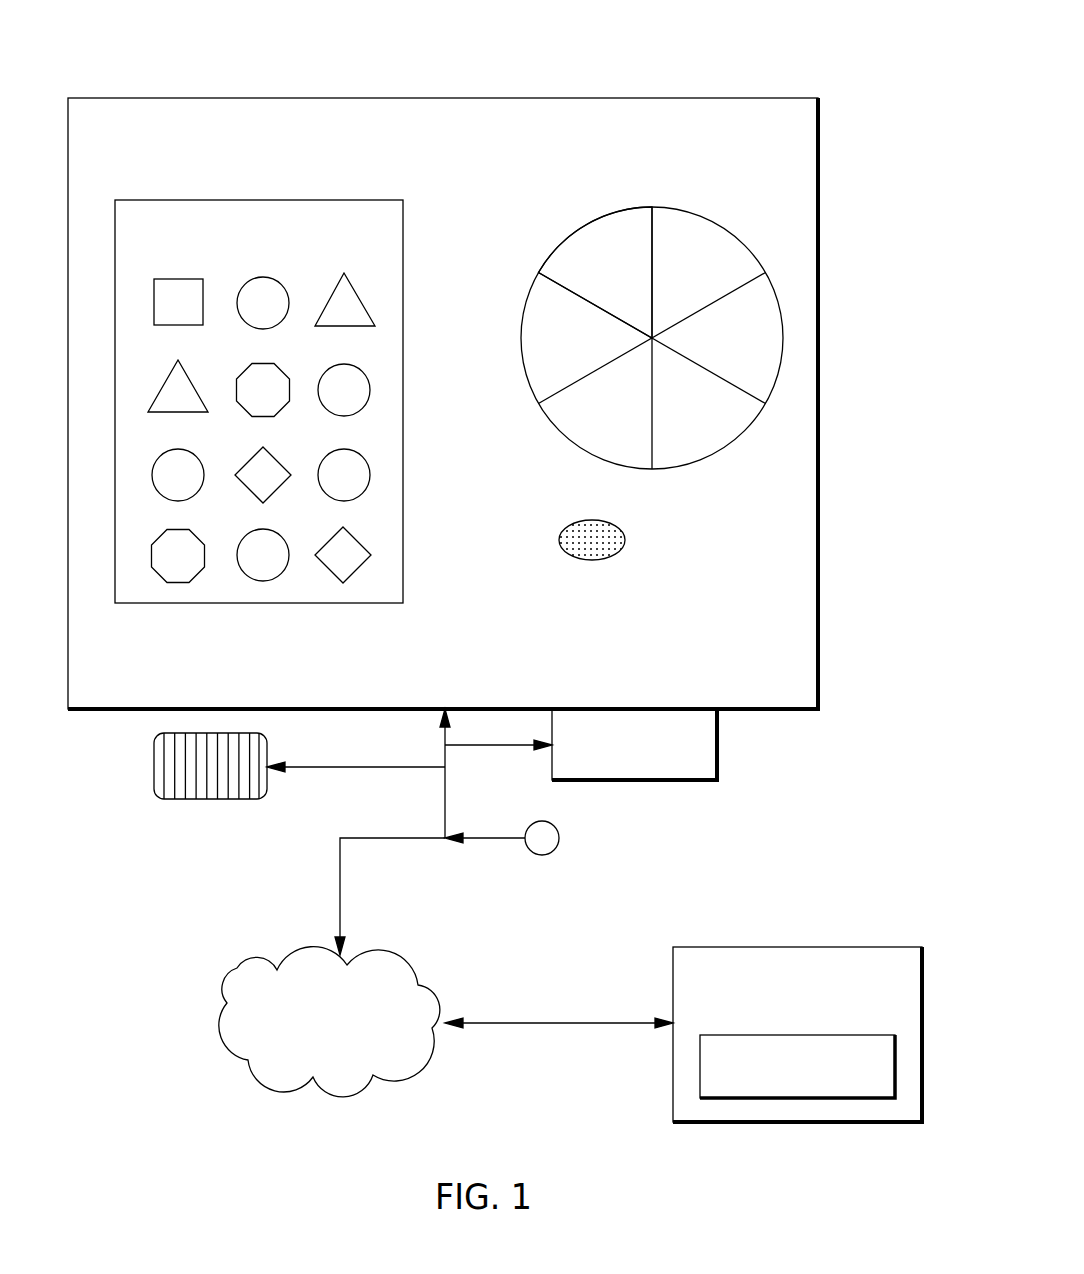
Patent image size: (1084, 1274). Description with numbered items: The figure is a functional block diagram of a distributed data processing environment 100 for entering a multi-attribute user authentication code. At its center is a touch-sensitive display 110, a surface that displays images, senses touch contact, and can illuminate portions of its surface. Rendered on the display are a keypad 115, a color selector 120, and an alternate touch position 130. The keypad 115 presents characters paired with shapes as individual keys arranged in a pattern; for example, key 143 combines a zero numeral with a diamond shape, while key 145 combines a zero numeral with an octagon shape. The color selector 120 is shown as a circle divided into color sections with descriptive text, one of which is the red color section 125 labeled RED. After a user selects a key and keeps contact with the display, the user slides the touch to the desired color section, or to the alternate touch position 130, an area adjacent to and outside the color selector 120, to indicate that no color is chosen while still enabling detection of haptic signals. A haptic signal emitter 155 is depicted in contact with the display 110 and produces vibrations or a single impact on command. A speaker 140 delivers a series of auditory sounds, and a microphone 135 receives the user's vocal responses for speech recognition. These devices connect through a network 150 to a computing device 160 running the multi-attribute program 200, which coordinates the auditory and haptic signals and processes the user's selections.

The distributed data processing environment 100 is at (830, 36).
The touch-sensitive display 110 is at (818, 162).
The keypad 115 is at (298, 380).
The color selector 120 is at (633, 352).
The red color section 125 is at (590, 252).
The alternate touch position 130 is at (593, 560).
The microphone 135 is at (559, 832).
The speaker 140 is at (154, 766).
The key 143 is at (365, 562).
The key 145 is at (283, 410).
The network 150 is at (237, 968).
The haptic signal emitter 155 is at (717, 745).
The computing device 160 is at (762, 1015).
The multi-attribute program 200 is at (700, 1072).